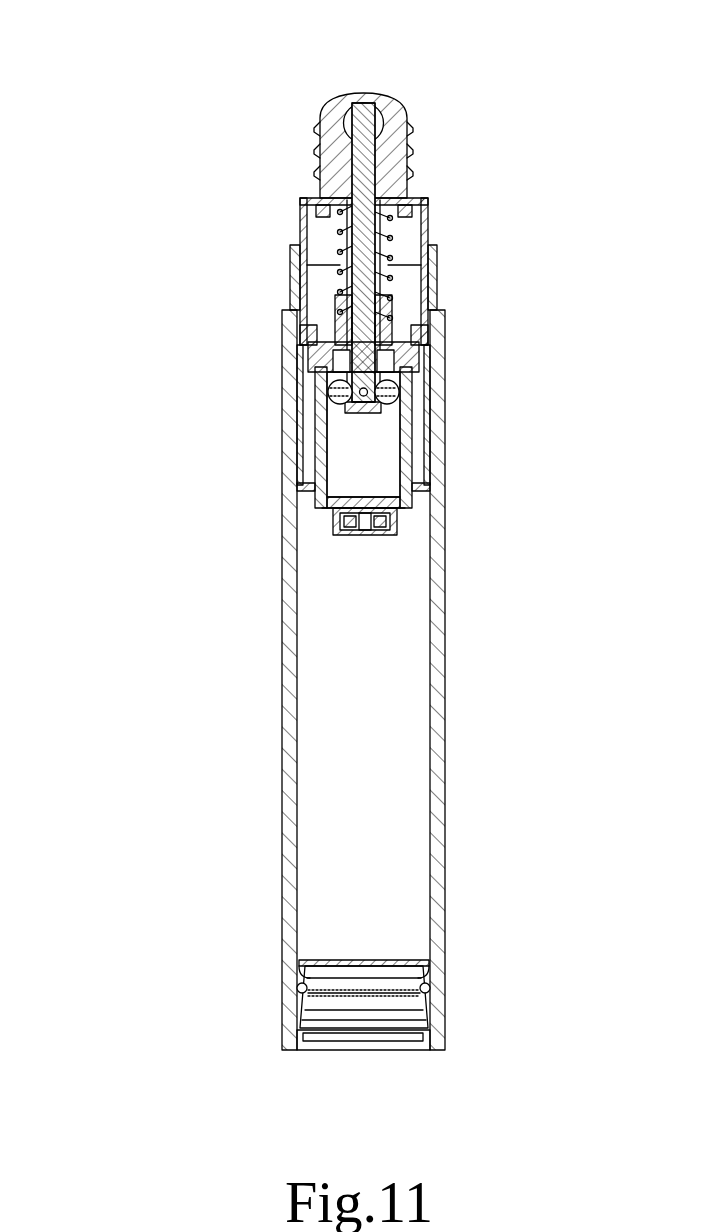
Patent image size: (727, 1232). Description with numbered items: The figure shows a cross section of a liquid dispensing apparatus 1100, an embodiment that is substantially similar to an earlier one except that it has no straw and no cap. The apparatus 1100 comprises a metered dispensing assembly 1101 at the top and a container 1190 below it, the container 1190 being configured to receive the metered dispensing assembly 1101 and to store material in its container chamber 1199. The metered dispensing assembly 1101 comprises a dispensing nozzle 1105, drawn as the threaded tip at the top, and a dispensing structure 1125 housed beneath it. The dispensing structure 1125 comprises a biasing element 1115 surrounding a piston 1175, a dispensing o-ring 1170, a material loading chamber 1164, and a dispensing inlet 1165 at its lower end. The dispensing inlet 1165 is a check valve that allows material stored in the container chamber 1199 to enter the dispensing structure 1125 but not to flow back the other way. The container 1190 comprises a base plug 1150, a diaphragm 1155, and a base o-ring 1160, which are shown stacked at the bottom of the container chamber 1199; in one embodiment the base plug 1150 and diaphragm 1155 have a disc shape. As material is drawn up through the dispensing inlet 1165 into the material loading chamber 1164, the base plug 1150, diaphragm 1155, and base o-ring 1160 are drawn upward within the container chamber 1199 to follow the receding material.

The liquid dispensing apparatus 1100 is at (233, 65).
The metered dispensing assembly 1101 is at (168, 238).
The dispensing nozzle 1105 is at (285, 150).
The biasing element 1115 is at (275, 263).
The dispensing structure 1125 is at (192, 407).
The material loading chamber 1164 is at (286, 439).
The dispensing inlet 1165 is at (456, 492).
The dispensing o-ring 1170 is at (464, 364).
The piston 1175 is at (462, 258).
The container 1190 is at (253, 661).
The container chamber 1199 is at (437, 735).
The diaphragm 1155 is at (347, 979).
The base o-ring 1160 is at (272, 961).
The base plug 1150 is at (417, 1065).